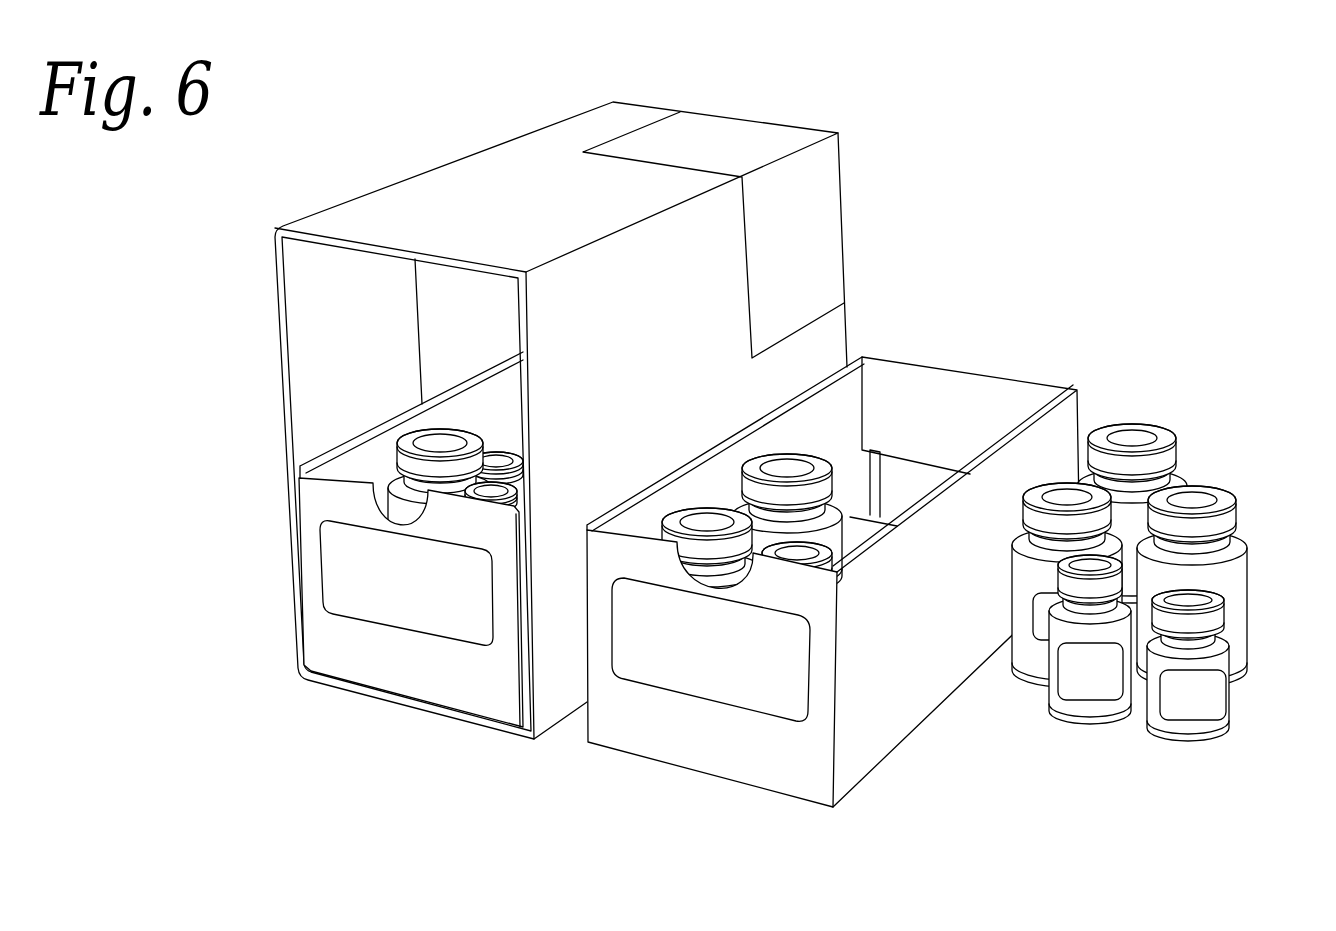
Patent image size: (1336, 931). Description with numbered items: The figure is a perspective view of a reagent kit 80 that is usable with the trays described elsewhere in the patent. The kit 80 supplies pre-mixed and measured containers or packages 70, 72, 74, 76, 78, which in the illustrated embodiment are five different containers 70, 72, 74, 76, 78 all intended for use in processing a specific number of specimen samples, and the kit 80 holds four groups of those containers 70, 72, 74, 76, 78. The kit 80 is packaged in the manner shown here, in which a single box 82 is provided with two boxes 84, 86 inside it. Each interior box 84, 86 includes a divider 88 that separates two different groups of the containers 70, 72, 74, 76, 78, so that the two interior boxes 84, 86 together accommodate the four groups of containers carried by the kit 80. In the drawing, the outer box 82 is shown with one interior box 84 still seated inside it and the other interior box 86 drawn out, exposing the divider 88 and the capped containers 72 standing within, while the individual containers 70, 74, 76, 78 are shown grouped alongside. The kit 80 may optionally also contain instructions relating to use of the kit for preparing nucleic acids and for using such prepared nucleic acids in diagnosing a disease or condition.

The container 70 is at (1190, 703).
The container 72 is at (408, 461).
The container 74 is at (1236, 576).
The container 76 is at (1023, 657).
The container 78 is at (1078, 696).
The kit 80 is at (868, 269).
The box 82 is at (522, 187).
The interior box 84 is at (390, 673).
The interior box 86 is at (652, 740).
The divider 88 is at (857, 537).